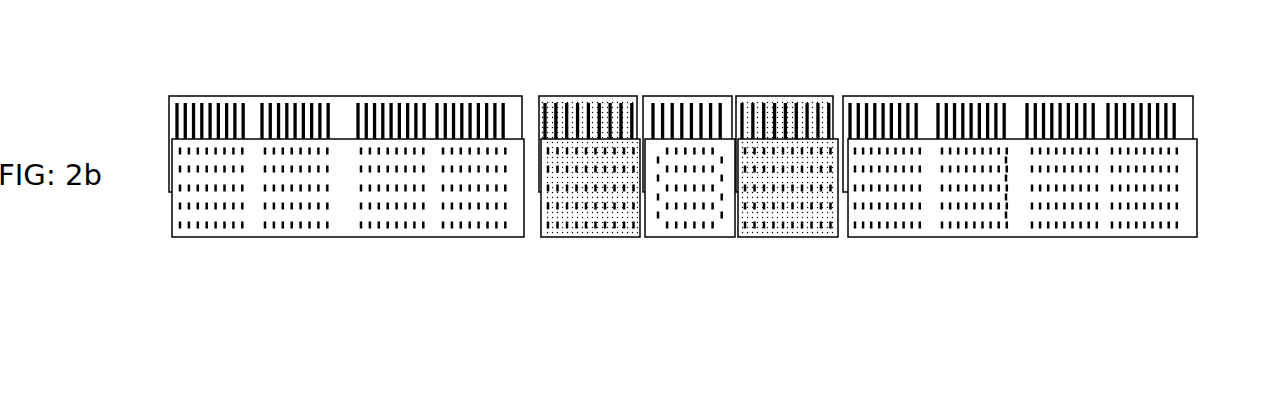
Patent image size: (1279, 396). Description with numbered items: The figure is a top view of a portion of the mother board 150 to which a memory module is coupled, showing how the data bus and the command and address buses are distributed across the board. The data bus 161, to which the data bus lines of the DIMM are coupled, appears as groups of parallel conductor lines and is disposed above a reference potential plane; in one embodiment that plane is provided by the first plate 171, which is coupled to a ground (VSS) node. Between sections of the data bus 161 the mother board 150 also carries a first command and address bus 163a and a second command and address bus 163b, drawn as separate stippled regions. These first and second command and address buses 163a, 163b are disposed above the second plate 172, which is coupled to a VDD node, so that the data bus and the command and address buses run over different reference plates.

The mother board 150 is at (1145, 97).
The data bus 161 is at (502, 115).
The first command and address bus 163a is at (545, 113).
The second command and address bus 163b is at (765, 113).
The first plate 171 is at (172, 128).
The second plate 172 is at (822, 103).